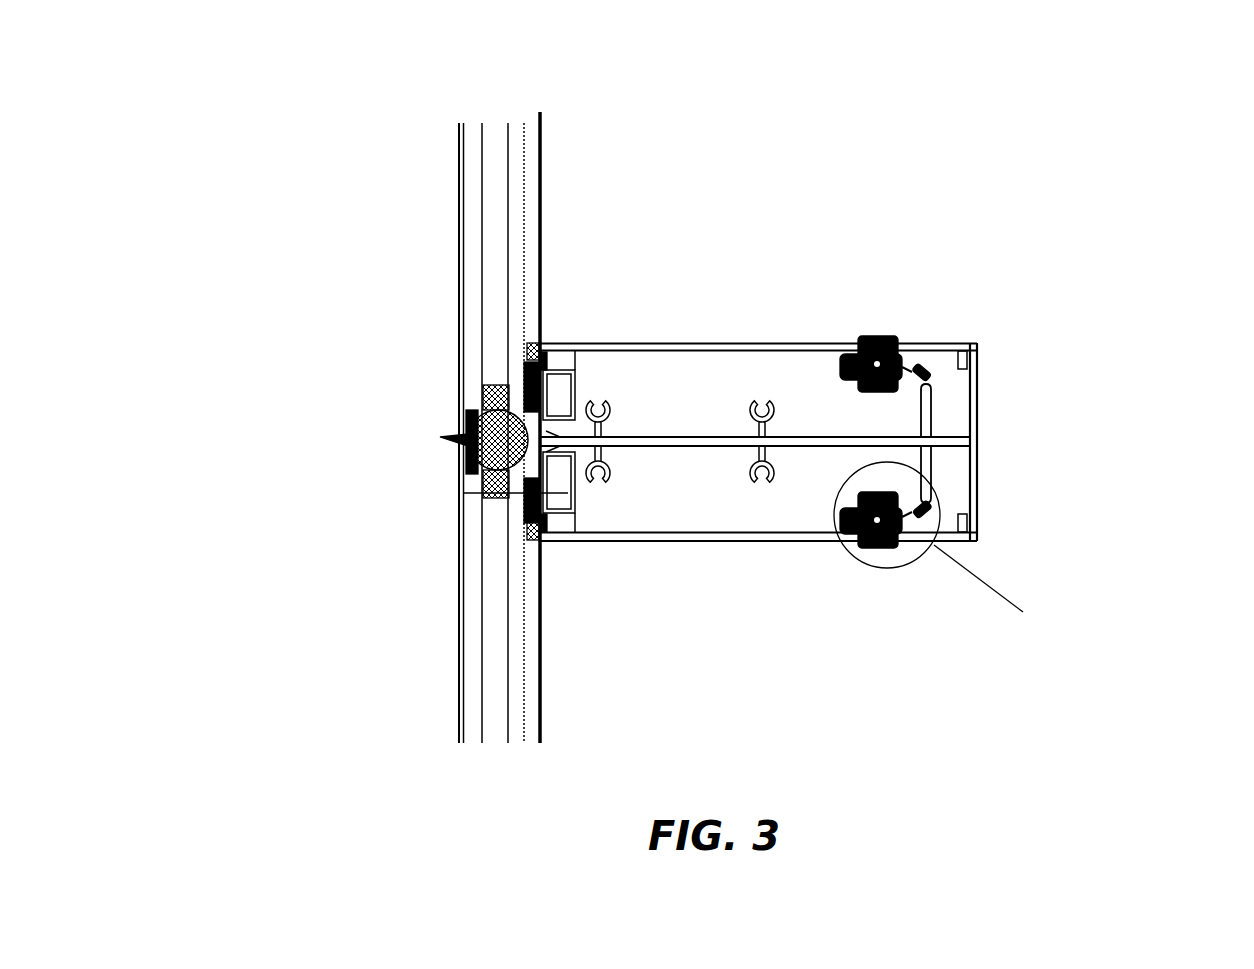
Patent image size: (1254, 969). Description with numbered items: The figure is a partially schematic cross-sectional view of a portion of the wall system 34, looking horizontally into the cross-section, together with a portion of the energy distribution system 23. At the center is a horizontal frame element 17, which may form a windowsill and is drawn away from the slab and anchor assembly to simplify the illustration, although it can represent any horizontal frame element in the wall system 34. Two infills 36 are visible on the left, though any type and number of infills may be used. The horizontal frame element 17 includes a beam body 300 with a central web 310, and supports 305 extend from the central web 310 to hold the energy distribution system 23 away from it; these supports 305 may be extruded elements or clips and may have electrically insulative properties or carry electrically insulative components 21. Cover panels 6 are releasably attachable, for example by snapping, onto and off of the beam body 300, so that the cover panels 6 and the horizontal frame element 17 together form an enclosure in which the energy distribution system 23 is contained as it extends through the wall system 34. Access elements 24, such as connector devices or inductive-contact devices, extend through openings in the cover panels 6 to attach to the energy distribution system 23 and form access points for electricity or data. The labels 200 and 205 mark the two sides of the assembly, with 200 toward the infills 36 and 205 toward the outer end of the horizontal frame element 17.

The interior side 200 is at (222, 203).
The exterior side 205 is at (1174, 193).
The wall system 34 is at (868, 86).
The infill 36 is at (459, 263).
The cover panel 6 is at (698, 343).
The central web 310 is at (652, 435).
The beam body 300 is at (677, 498).
The horizontal frame element 17 is at (979, 447).
The support 305 is at (930, 413).
The energy distribution system 23 is at (856, 337).
The access element 24 is at (886, 338).
The electrically insulative component 21 is at (934, 368).